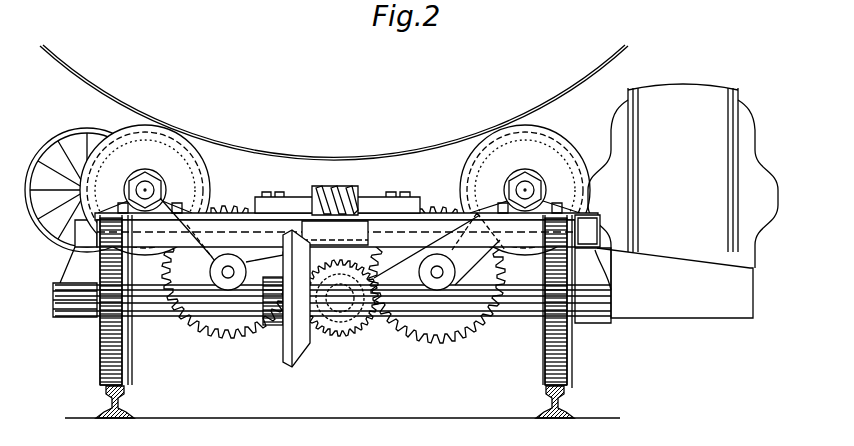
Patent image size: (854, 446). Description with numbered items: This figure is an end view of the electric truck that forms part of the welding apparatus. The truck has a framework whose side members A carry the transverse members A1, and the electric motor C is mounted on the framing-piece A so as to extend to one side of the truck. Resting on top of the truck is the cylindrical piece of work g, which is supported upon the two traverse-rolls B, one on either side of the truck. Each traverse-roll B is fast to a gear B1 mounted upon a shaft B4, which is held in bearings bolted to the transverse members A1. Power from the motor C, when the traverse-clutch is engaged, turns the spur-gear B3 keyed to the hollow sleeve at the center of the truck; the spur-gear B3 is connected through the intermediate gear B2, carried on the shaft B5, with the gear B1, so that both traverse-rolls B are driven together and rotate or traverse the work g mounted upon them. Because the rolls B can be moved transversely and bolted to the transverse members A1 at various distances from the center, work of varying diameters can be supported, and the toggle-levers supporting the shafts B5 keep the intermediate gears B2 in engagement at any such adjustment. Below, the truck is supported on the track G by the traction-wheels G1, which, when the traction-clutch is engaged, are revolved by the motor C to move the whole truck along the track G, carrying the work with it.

The cylindrical piece of work g is at (344, 160).
The side member A is at (80, 235).
The transverse member A1 is at (428, 228).
The traverse-roll B is at (553, 136).
The gear B1 is at (573, 157).
The intermediate gear B2 is at (475, 331).
The spur-gear B3 is at (366, 331).
The shaft B4 is at (526, 186).
The shaft B5 is at (436, 270).
The electric motor C is at (684, 92).
The track G is at (128, 402).
The traction-wheel G1 is at (118, 328).